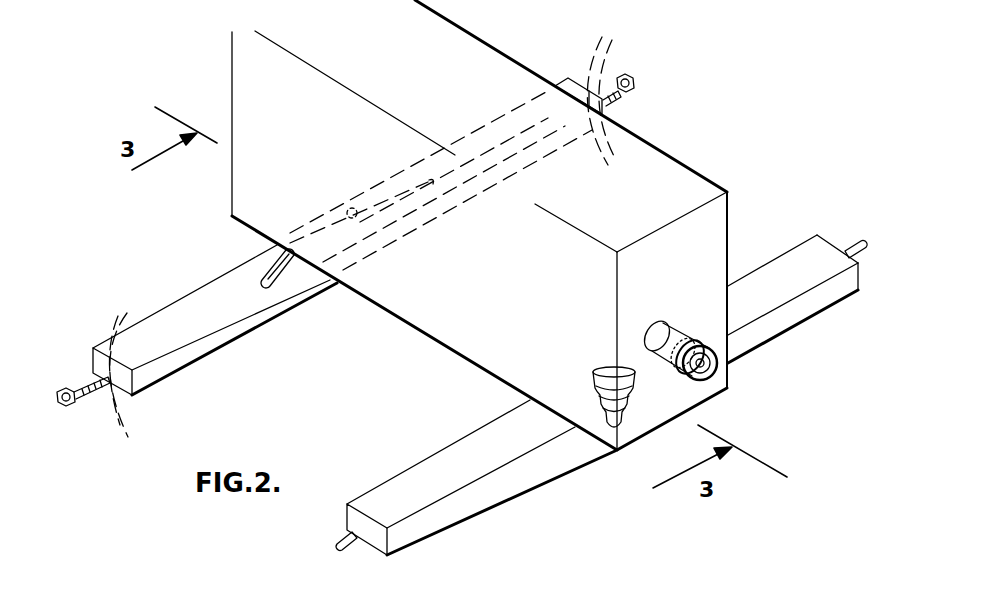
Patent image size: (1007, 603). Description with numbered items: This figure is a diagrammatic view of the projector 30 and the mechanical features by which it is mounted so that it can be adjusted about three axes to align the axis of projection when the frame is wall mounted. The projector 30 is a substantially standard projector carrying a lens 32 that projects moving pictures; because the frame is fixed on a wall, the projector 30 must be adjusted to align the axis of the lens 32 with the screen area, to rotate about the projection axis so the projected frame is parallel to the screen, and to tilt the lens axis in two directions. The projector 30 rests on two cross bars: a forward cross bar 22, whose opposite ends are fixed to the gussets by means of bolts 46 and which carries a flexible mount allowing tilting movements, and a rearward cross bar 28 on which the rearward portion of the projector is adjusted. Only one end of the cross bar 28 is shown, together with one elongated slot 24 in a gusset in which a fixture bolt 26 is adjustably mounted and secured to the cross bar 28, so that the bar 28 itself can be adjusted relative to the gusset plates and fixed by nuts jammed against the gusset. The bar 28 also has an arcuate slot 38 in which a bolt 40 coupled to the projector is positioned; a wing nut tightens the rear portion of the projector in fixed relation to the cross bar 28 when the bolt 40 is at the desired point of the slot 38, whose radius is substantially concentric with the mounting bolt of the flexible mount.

The cross bar 22 is at (785, 282).
The elongated slot 24 is at (107, 342).
The fixture bolt 26 is at (72, 390).
The cross bar 28 is at (215, 335).
The projector 30 is at (490, 268).
The lens 32 is at (705, 347).
The arcuate slot 38 is at (262, 275).
The bolt 40 is at (357, 230).
The bolt 46 is at (848, 248).